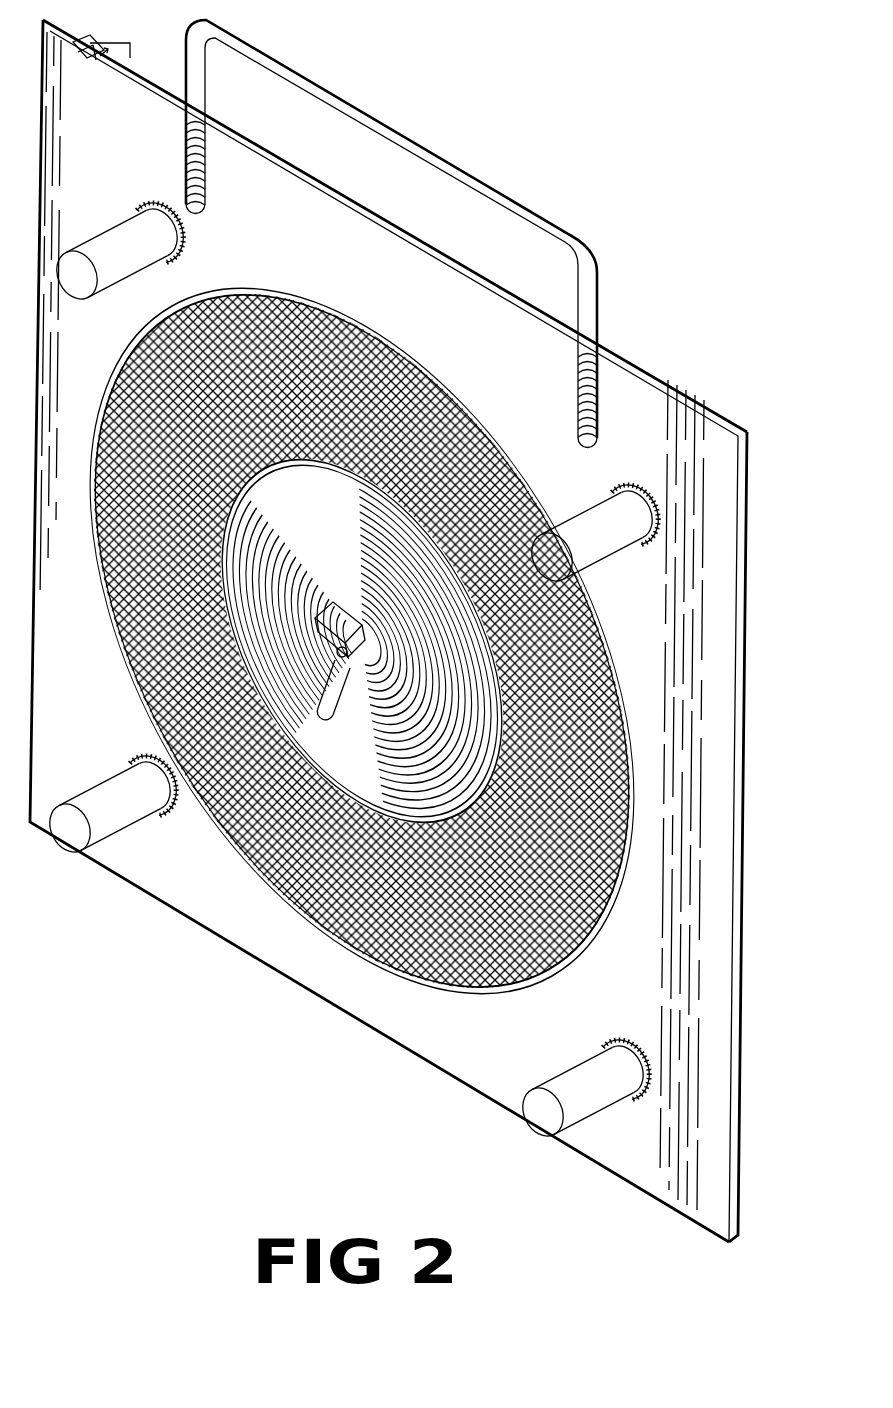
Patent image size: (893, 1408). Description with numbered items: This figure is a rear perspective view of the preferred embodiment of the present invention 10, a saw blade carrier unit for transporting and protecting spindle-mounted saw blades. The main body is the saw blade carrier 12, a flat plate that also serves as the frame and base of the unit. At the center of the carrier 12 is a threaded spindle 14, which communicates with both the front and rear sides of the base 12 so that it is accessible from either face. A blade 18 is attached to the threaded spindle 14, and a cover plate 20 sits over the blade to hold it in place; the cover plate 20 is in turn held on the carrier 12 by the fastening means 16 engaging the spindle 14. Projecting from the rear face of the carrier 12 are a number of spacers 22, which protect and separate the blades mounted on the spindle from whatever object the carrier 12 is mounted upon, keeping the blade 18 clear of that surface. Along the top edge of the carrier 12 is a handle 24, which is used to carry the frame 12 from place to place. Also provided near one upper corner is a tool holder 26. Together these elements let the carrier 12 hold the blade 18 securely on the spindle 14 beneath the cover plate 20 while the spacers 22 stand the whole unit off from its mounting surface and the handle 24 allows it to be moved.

The present invention 10 is at (433, 192).
The saw blade carrier 12 is at (712, 537).
The threaded spindle 14 is at (348, 655).
The fastening means 16 is at (337, 702).
The blade 18 is at (605, 873).
The cover plate 20 is at (494, 692).
The spacers 22 is at (592, 555).
The handle 24 is at (527, 218).
The tool holder 26 is at (88, 58).